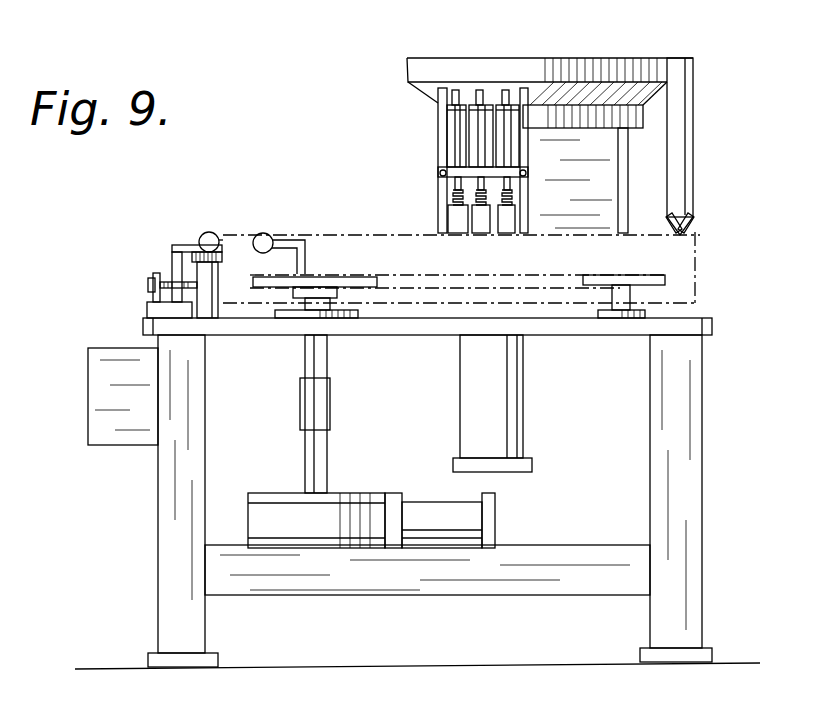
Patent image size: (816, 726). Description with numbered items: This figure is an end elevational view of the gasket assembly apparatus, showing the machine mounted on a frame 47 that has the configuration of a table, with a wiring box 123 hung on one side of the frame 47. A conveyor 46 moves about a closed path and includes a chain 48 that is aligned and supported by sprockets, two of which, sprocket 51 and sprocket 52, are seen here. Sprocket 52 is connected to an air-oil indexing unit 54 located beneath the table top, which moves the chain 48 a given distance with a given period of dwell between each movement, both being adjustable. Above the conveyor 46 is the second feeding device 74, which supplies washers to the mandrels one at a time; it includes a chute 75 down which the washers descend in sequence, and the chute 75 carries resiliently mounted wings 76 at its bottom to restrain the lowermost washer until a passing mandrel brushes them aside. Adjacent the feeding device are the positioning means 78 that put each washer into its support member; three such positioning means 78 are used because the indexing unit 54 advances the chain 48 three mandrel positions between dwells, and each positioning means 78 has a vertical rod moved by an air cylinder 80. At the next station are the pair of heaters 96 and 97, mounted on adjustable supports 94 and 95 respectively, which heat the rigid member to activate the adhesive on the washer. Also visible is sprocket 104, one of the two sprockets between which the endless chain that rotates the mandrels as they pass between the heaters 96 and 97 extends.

The second feeding device 74 is at (603, 52).
The chute 75 is at (685, 152).
The resiliently mounted wings 76 is at (696, 222).
The air cylinder 80 is at (498, 147).
The positioning means 78 is at (507, 222).
The conveyor 46 is at (657, 267).
The sprocket 51 is at (660, 282).
The chain 48 is at (542, 287).
The sprocket 52 is at (367, 285).
The air-oil indexing unit 54 is at (390, 487).
The frame 47 is at (137, 325).
The wiring box 123 is at (102, 390).
The sprocket 104 is at (197, 255).
The adjustable support 95 is at (152, 273).
The heater 97 is at (210, 232).
The heater 96 is at (270, 234).
The adjustable support 94 is at (305, 256).